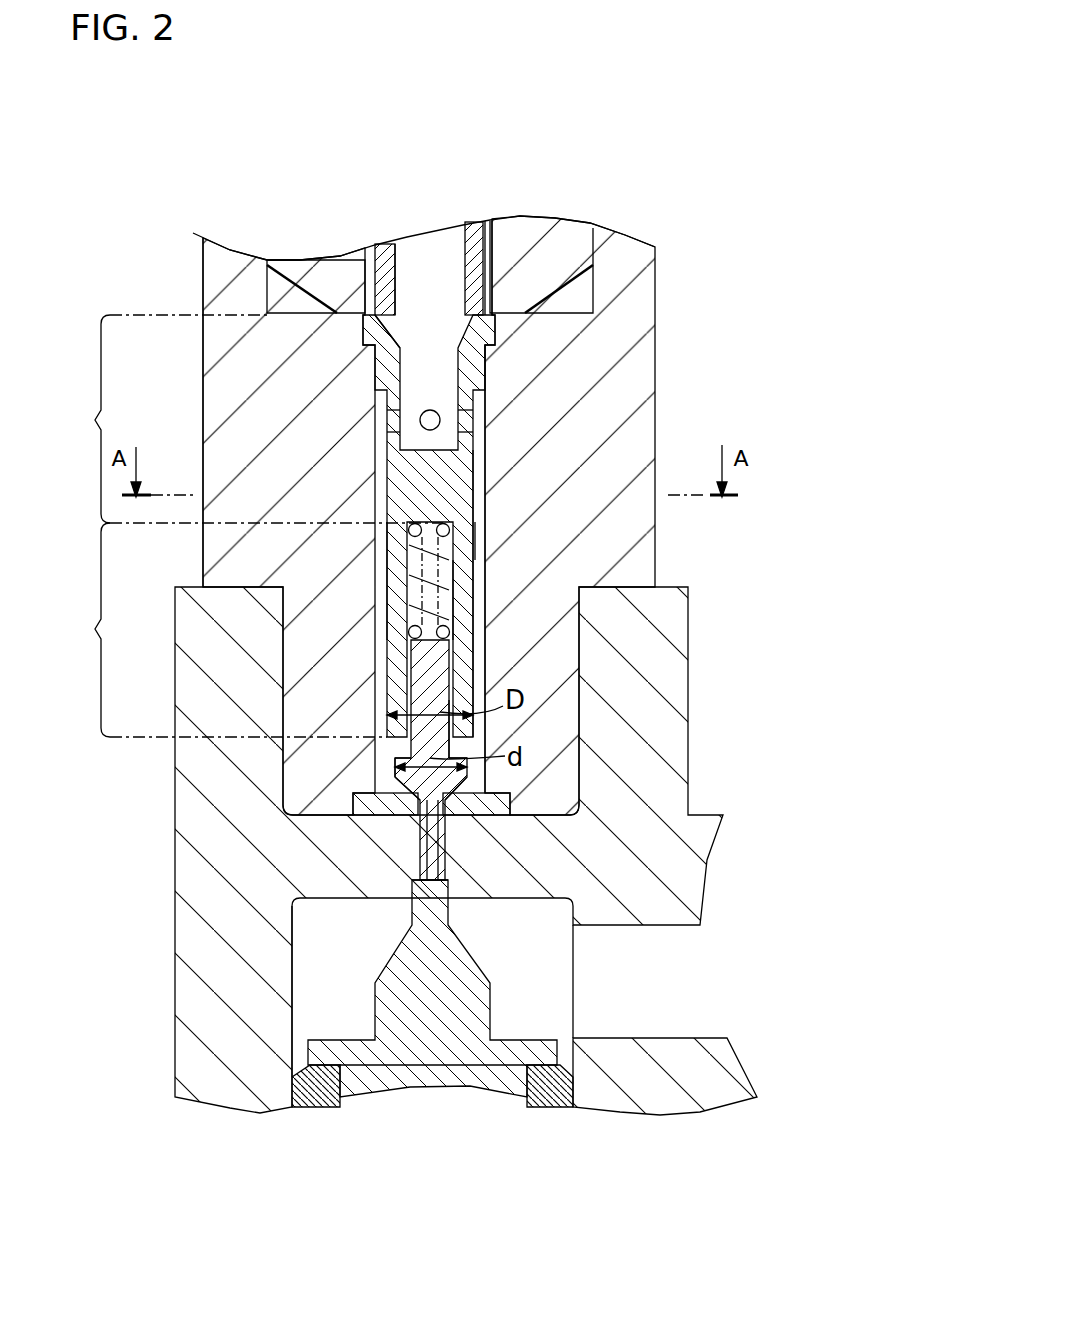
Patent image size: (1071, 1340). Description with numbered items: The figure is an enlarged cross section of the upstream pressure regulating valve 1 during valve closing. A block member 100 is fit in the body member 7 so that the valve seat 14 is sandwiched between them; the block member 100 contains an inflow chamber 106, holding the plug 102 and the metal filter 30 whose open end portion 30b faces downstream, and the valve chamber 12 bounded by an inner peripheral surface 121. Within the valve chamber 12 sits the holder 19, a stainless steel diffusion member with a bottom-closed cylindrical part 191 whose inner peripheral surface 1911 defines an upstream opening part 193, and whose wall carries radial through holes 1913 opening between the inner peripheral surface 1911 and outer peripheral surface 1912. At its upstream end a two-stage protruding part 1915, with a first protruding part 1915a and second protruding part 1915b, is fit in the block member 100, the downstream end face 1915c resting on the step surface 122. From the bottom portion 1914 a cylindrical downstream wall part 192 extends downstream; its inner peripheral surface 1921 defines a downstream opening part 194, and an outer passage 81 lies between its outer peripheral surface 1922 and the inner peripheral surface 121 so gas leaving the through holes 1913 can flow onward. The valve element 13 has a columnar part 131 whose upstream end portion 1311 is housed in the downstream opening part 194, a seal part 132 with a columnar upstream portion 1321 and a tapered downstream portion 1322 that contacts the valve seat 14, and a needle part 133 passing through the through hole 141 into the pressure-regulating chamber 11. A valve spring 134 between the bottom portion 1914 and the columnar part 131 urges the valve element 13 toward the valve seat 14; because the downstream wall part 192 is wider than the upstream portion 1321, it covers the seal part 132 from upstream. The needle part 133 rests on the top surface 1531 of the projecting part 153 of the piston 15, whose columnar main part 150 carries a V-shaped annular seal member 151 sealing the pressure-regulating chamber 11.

The upstream pressure regulating valve 1 is at (166, 256).
The body member 7 is at (622, 673).
The pressure-regulating chamber 11 is at (324, 945).
The valve chamber 12 is at (395, 800).
The valve element 13 is at (417, 750).
The valve seat 14 is at (360, 800).
The piston 15 is at (430, 1027).
The holder 19 is at (442, 526).
The filter 30 is at (477, 230).
The open end portion 30b is at (495, 320).
The outer passage 81 is at (477, 558).
The block member 100 is at (620, 248).
The plug 102 is at (532, 243).
The inflow chamber 106 is at (583, 287).
The inner peripheral surface 121 is at (490, 530).
The step surface 122 is at (372, 313).
The columnar part 131 is at (393, 760).
The seal part 132 is at (396, 776).
The needle part 133 is at (412, 795).
The valve spring 134 is at (405, 540).
The through hole 141 is at (508, 797).
The main part 150 is at (467, 1073).
The annular seal member 151 is at (305, 1093).
The projecting part 153 is at (405, 1002).
The bottom-closed cylindrical part 191 is at (246, 419).
The downstream wall part 192 is at (218, 630).
The upstream opening part 193 is at (435, 387).
The downstream opening part 194 is at (483, 600).
The end portion 1311 is at (473, 653).
The upstream portion 1321 is at (462, 755).
The downstream portion 1322 is at (460, 787).
The top surface 1531 is at (448, 873).
The inner peripheral surface 1911 is at (447, 338).
The outer peripheral surface 1912 is at (490, 428).
The through holes 1913 is at (470, 380).
The bottom portion 1914 is at (500, 473).
The protruding part 1915 is at (507, 123).
The first protruding part 1915a is at (408, 268).
The second protruding part 1915b is at (440, 268).
The downstream end face 1915c is at (366, 352).
The inner peripheral surface 1921 is at (390, 575).
The outer peripheral surface 1922 is at (440, 700).